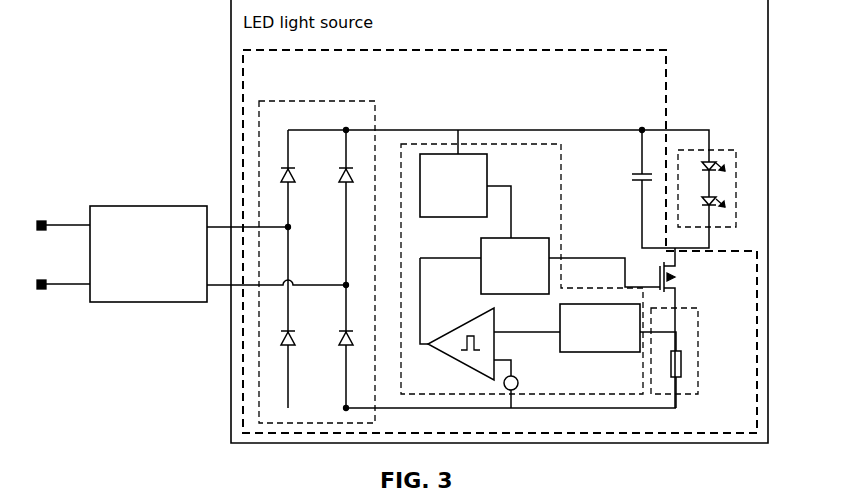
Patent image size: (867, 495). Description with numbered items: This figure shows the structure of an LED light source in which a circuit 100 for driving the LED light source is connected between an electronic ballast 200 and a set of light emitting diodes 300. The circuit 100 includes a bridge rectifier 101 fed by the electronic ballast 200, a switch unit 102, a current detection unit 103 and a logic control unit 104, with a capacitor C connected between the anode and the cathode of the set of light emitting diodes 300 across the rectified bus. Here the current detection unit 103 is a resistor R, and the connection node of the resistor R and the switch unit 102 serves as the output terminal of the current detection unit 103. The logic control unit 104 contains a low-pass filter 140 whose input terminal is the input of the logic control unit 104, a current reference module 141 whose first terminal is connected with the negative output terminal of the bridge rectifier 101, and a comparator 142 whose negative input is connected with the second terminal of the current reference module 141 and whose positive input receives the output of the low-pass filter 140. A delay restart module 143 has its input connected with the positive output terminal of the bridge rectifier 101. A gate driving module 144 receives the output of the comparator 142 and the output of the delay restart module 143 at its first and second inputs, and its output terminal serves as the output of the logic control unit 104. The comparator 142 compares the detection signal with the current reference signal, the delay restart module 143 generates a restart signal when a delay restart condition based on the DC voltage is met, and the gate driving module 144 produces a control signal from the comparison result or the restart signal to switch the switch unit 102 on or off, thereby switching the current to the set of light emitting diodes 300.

The circuit for driving LED light source 100 is at (670, 113).
The bridge rectifier 101 is at (375, 128).
The switch unit 102 is at (683, 282).
The current detection unit 103 is at (700, 331).
The logic control unit 104 is at (562, 200).
The low-pass filter 140 is at (608, 352).
The current reference module 141 is at (519, 377).
The comparator 142 is at (468, 319).
The delay restart module 143 is at (490, 176).
The gate driving module 144 is at (481, 248).
The electronic ballast 200 is at (150, 206).
The set of light emitting diodes 300 is at (718, 148).